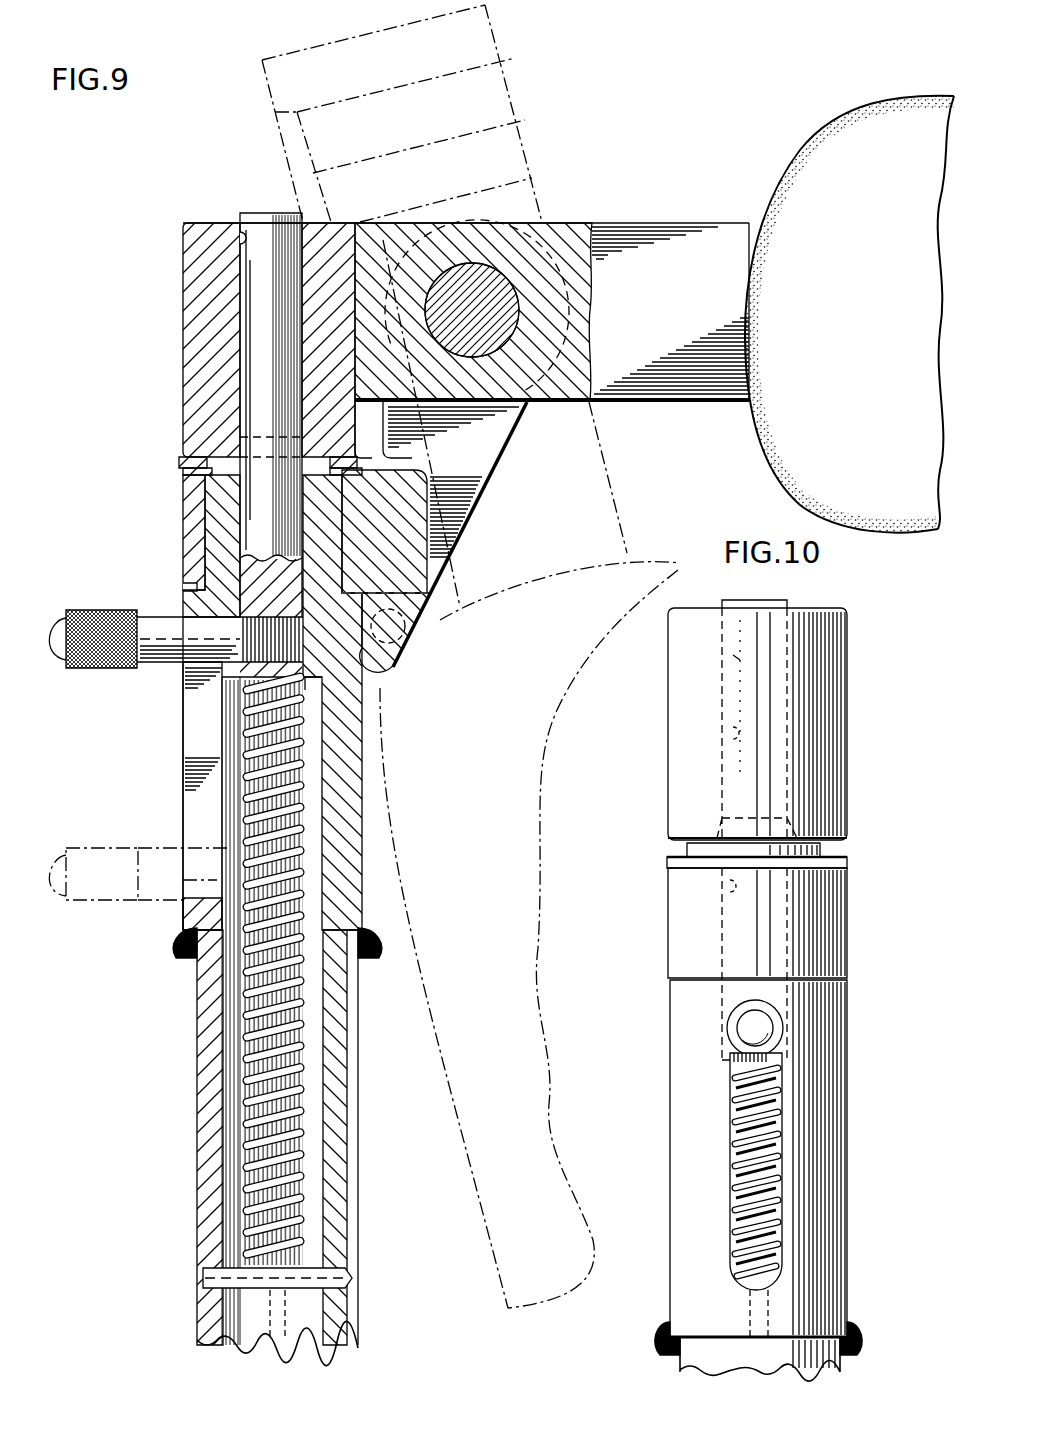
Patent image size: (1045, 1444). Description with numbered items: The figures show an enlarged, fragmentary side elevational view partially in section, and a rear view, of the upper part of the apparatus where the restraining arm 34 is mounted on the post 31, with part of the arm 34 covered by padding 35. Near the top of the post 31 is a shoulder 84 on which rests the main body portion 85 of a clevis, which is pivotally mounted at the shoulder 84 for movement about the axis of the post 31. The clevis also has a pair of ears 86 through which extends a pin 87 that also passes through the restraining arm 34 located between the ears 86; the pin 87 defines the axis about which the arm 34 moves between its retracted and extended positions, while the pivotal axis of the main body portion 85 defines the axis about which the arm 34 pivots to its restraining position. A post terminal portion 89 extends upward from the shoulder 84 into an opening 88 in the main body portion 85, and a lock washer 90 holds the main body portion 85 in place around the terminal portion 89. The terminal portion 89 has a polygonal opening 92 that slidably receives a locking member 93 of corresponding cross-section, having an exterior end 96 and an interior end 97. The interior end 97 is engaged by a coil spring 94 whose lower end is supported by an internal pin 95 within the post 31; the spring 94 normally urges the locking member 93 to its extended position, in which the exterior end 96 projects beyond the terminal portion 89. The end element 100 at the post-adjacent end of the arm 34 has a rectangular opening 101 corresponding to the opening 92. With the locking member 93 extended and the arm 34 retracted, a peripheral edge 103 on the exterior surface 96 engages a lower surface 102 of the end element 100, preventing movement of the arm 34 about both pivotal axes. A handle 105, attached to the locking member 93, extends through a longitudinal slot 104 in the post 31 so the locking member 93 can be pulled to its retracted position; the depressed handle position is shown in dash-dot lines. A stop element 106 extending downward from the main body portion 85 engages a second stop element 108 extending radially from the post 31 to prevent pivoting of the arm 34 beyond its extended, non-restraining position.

In FIG. 9, the post 31 is at (197, 1028).
In FIG. 10, the post 31 is at (690, 1223).
In FIG. 9, the restraining arm 34 is at (652, 233).
In FIG. 9, the padding 35 is at (838, 264).
In FIG. 9, the shoulder 84 is at (190, 587).
In FIG. 9, the main body portion of clevis 85 is at (183, 545).
In FIG. 10, the main body portion of clevis 85 is at (668, 934).
In FIG. 9, the ears of clevis 86 is at (475, 453).
In FIG. 9, the pin 87 is at (500, 287).
In FIG. 9, the opening in clevis main body portion 88 is at (210, 508).
In FIG. 9, the post terminal portion 89 is at (207, 485).
In FIG. 10, the post terminal portion 89 is at (822, 847).
In FIG. 9, the lock washer 90 is at (186, 460).
In FIG. 10, the lock washer 90 is at (834, 864).
In FIG. 9, the opening in terminal portion 92 is at (253, 457).
In FIG. 10, the opening in terminal portion 92 is at (730, 885).
In FIG. 9, the locking member 93 is at (262, 318).
In FIG. 10, the locking member 93 is at (737, 658).
In FIG. 9, the coil spring 94 is at (304, 1043).
In FIG. 10, the coil spring 94 is at (744, 1148).
In FIG. 9, the internal pin 95 is at (352, 1278).
In FIG. 9, the exterior end of locking member 96 is at (262, 211).
In FIG. 10, the exterior end of locking member 96 is at (773, 600).
In FIG. 9, the interior end of locking member 97 is at (221, 692).
In FIG. 10, the interior end of locking member 97 is at (750, 1066).
In FIG. 9, the end element 100 is at (485, 32).
In FIG. 10, the end element 100 is at (847, 704).
In FIG. 9, the rectangular opening 101 is at (239, 238).
In FIG. 10, the rectangular opening 101 is at (733, 733).
In FIG. 9, the lower surface of end element 102 is at (262, 76).
In FIG. 9, the peripheral edge 103 is at (303, 211).
In FIG. 9, the slot 104 is at (208, 760).
In FIG. 10, the slot 104 is at (735, 1096).
In FIG. 9, the handle 105 is at (82, 660).
In FIG. 10, the handle 105 is at (740, 1028).
In FIG. 9, the stop element 106 is at (390, 665).
In FIG. 9, the second stop element 108 is at (417, 628).